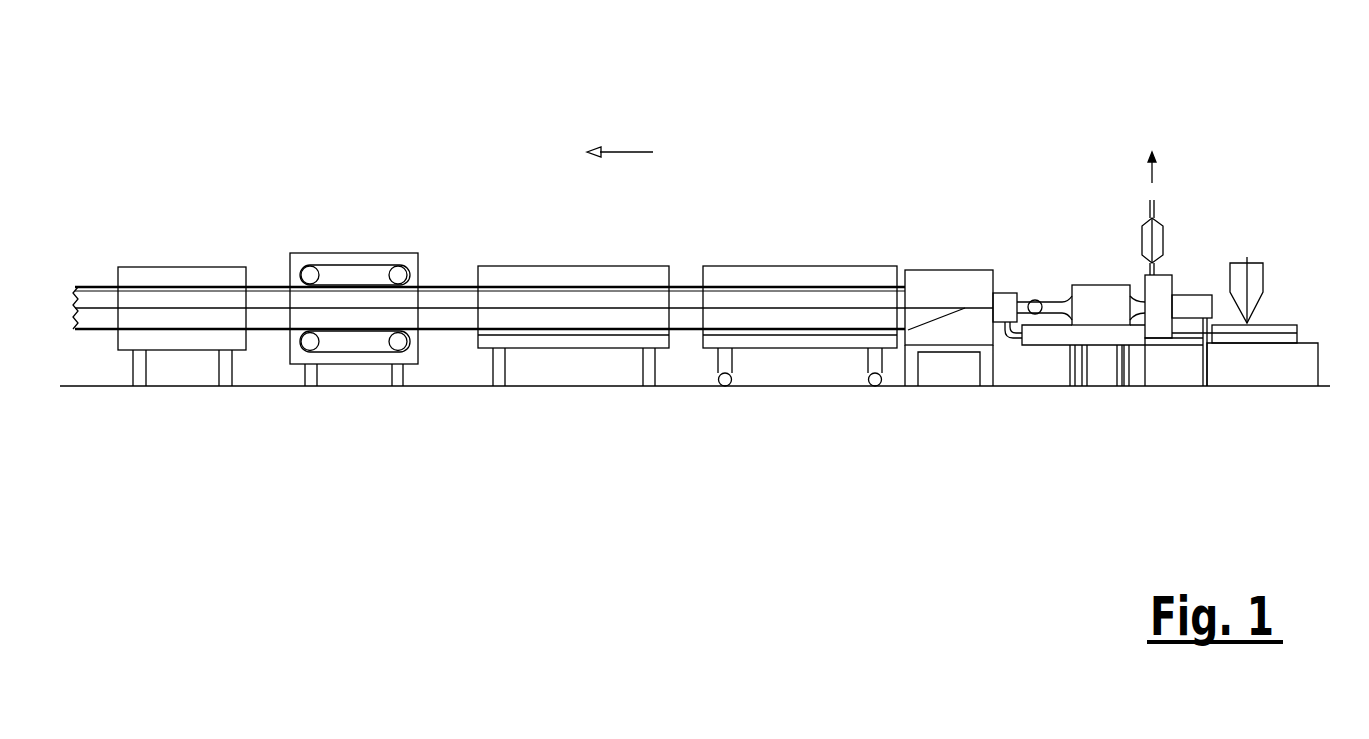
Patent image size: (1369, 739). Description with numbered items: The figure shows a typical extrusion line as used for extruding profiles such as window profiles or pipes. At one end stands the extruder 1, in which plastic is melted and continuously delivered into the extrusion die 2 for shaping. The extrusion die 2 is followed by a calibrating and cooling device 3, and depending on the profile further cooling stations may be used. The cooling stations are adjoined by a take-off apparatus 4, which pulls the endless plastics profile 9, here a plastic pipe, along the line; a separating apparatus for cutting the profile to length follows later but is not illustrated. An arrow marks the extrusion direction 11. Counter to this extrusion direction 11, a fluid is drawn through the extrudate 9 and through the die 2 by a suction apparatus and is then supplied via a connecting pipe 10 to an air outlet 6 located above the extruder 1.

The extruder 1 is at (1273, 323).
The extrusion die 2 is at (950, 290).
The calibrating and cooling device 3 is at (641, 280).
The take-off apparatus 4 is at (330, 272).
The air outlet 6 is at (1155, 195).
The plastics profile 9 is at (450, 300).
The connecting pipe 10 is at (1042, 296).
The extrusion direction 11 is at (623, 149).